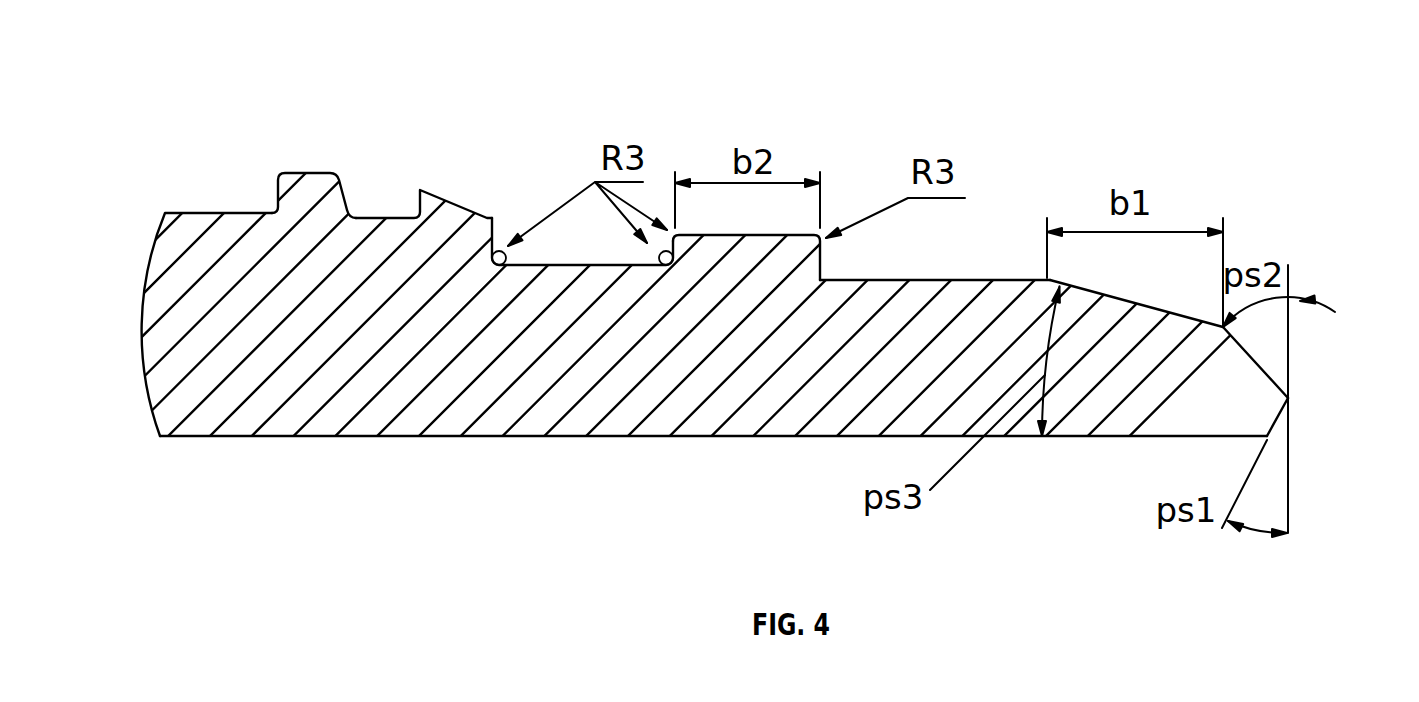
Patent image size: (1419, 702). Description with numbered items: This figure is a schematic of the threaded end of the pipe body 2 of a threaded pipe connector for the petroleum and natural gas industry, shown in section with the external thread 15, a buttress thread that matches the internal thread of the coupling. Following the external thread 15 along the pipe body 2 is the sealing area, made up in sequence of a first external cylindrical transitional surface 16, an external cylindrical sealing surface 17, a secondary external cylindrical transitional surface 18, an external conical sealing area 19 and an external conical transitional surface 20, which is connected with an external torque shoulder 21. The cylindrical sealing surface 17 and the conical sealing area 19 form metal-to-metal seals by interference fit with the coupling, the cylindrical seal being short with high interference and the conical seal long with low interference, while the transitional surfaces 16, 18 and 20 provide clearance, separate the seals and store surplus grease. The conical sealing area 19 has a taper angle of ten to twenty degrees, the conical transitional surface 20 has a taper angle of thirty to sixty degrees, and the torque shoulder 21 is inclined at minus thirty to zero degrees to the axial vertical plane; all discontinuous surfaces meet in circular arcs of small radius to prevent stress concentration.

The pipe body 2 is at (181, 250).
The external thread 15 is at (305, 213).
The first external cylindrical transitional surface 16 is at (565, 263).
The external cylindrical sealing surface 17 is at (757, 236).
The secondary external cylindrical transitional surface 18 is at (945, 280).
The external conical sealing area 19 is at (1200, 360).
The external conical transitional surface 20 is at (1270, 378).
The external torque shoulder 21 is at (1282, 417).